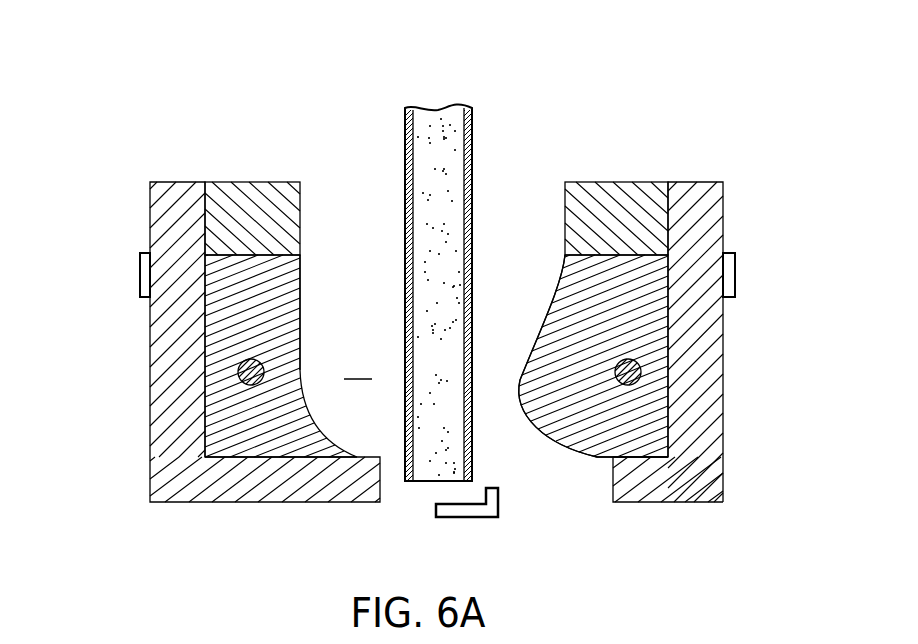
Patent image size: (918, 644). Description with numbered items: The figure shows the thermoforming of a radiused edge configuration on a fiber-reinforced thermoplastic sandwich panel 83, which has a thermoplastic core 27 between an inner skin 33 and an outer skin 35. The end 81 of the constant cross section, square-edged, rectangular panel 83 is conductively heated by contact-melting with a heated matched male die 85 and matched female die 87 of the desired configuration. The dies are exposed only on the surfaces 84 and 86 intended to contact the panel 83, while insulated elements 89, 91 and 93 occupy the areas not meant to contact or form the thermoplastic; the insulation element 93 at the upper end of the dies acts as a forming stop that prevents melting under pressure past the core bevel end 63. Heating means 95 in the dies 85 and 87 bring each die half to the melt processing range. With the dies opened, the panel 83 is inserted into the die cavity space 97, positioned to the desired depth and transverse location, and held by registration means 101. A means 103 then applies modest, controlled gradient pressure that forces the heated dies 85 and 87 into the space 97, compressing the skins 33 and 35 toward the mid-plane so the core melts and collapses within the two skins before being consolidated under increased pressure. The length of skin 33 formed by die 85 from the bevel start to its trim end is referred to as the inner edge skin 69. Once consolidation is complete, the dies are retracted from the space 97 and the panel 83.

The core 27 is at (456, 291).
The skin 33 is at (472, 177).
The outer skin 35 is at (407, 160).
The sandwich panel 83 is at (432, 130).
The end 81 is at (428, 468).
The die cavity space 97 is at (358, 366).
The registration means 101 is at (480, 520).
The insulated element 91 is at (172, 390).
The insulation element 93 is at (230, 205).
The insulated element 89 is at (242, 488).
The surface 86 is at (300, 327).
The matched female die 87 is at (287, 287).
The surface 84 is at (550, 330).
The bevel end 63 is at (565, 277).
The inner edge skin 69 is at (518, 383).
The matched male die 85 is at (573, 428).
The heating means 95 is at (238, 373).
The means to force 103 is at (140, 280).